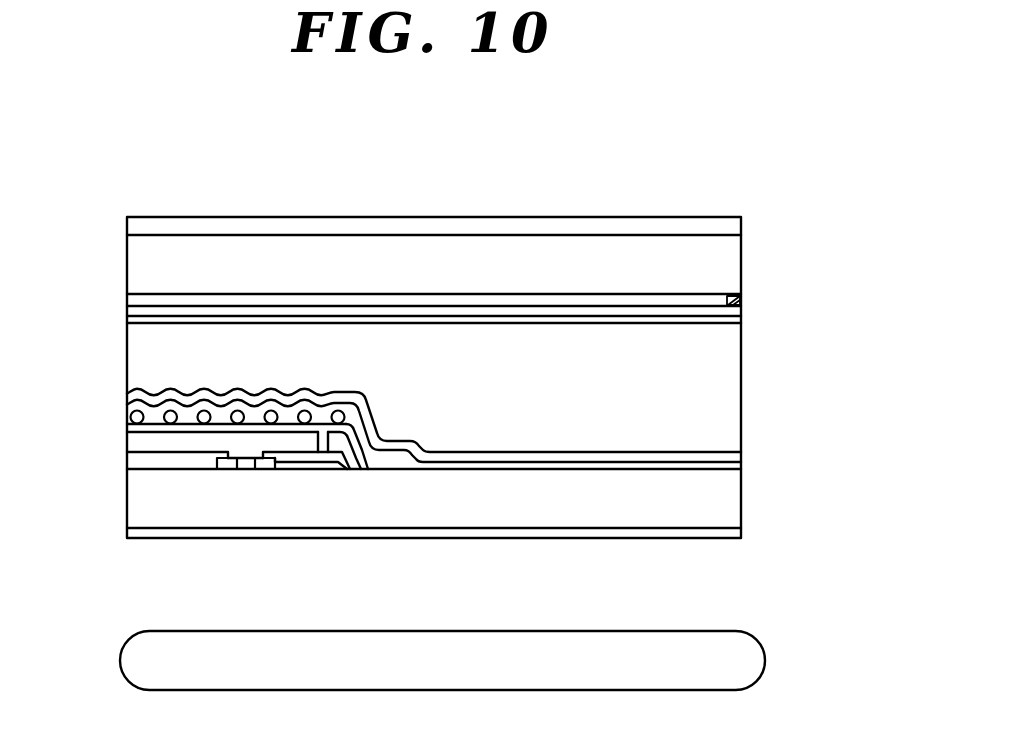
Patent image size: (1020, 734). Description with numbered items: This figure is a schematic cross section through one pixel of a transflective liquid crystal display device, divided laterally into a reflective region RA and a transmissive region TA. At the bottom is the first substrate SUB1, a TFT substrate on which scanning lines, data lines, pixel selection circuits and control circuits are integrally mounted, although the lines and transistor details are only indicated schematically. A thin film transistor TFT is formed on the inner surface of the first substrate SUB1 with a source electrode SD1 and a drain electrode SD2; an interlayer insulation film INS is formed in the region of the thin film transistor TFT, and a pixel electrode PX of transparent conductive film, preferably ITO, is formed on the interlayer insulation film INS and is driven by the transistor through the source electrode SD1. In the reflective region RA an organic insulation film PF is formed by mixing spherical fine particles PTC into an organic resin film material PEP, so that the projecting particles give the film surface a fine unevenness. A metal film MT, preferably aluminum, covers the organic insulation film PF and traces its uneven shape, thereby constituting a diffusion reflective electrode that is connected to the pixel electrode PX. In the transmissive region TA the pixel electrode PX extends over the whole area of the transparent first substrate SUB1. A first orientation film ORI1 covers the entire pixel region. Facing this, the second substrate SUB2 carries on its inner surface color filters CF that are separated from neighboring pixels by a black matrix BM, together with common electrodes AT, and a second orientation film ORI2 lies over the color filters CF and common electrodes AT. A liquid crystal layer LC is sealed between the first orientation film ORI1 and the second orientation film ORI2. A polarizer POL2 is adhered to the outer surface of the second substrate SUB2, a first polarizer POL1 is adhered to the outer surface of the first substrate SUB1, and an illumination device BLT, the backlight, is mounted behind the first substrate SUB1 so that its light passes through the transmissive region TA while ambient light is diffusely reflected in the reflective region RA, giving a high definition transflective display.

The reflective region RA is at (330, 190).
The transmissive region TA is at (741, 190).
The second orientation film ORI2 is at (192, 320).
The common electrodes AT is at (375, 310).
The color filters CF is at (522, 300).
The polarizer POL2 is at (657, 227).
The second substrate SUB2 is at (727, 263).
The black matrix BM is at (741, 304).
The liquid crystal layer LC is at (718, 385).
The first substrate SUB1 is at (725, 493).
The first polarizer POL1 is at (738, 533).
The organic resin film material PEP is at (188, 418).
The spherical fine particles PTC is at (172, 410).
The organic insulation film PF is at (122, 417).
The interlayer insulation film INS is at (135, 443).
The drain electrode SD2 is at (220, 452).
The source electrode SD1 is at (287, 452).
The metal film MT is at (374, 420).
The thin film transistor TFT is at (345, 550).
The first orientation film ORI1 is at (466, 450).
The pixel electrode PX is at (563, 468).
The illumination device BLT is at (442, 660).